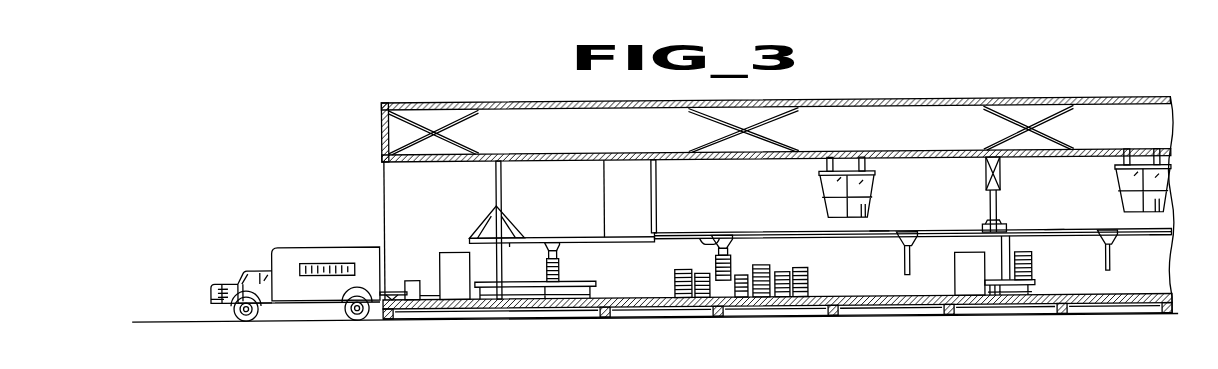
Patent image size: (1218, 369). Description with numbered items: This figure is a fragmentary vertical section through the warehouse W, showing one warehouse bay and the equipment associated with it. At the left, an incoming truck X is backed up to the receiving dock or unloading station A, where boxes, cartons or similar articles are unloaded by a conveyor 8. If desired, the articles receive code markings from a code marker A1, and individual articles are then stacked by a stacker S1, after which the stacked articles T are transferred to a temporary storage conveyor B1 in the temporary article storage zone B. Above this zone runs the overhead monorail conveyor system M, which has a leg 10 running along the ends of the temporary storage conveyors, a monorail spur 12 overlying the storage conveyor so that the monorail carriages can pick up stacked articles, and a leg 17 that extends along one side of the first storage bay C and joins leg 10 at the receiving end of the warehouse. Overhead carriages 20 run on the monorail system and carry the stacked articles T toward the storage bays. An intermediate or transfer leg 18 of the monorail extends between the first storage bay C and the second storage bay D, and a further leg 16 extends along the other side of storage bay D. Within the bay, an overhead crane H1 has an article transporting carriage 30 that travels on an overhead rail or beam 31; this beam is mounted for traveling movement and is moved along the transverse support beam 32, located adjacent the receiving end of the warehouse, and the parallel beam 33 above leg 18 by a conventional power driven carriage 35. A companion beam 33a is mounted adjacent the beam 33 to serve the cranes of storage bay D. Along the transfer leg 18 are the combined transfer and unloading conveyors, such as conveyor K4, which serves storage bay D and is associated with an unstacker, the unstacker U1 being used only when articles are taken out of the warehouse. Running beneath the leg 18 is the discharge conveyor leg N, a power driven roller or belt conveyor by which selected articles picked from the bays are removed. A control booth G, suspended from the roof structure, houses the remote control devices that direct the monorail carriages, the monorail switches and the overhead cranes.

The warehouse W is at (832, 92).
The receiving dock or unloading station A is at (403, 207).
The incoming truck X is at (318, 256).
The conveyor 8 is at (400, 291).
The code marker A1 is at (412, 281).
The stacker S1 is at (452, 258).
The overhead monorail conveyor system M is at (528, 236).
The monorail leg 10 is at (594, 238).
The monorail spur 12 is at (512, 243).
The monorail leg 17 is at (636, 243).
The overhead carriage 20 is at (551, 237).
The stacked articles T is at (560, 268).
The temporary storage conveyor B1 is at (585, 283).
The transverse support beam 32 is at (648, 232).
The power driven carriage 35 is at (656, 234).
The overhead crane H1 is at (708, 238).
The article transporting carriage 30 is at (734, 240).
The control booth G is at (828, 182).
The overhead rail or beam 31 is at (880, 232).
The parallel beam 33 is at (994, 226).
The beam 33a is at (1003, 226).
The intermediate or transfer leg 18 is at (1006, 229).
The monorail leg 16 is at (1130, 236).
The unstacker U1 is at (965, 283).
The combined transfer and unloading conveyor K4 is at (1034, 284).
The discharge conveyor leg N is at (990, 296).
The temporary article storage zone B is at (561, 300).
The first storage bay C is at (831, 273).
The second storage bay D is at (1095, 283).